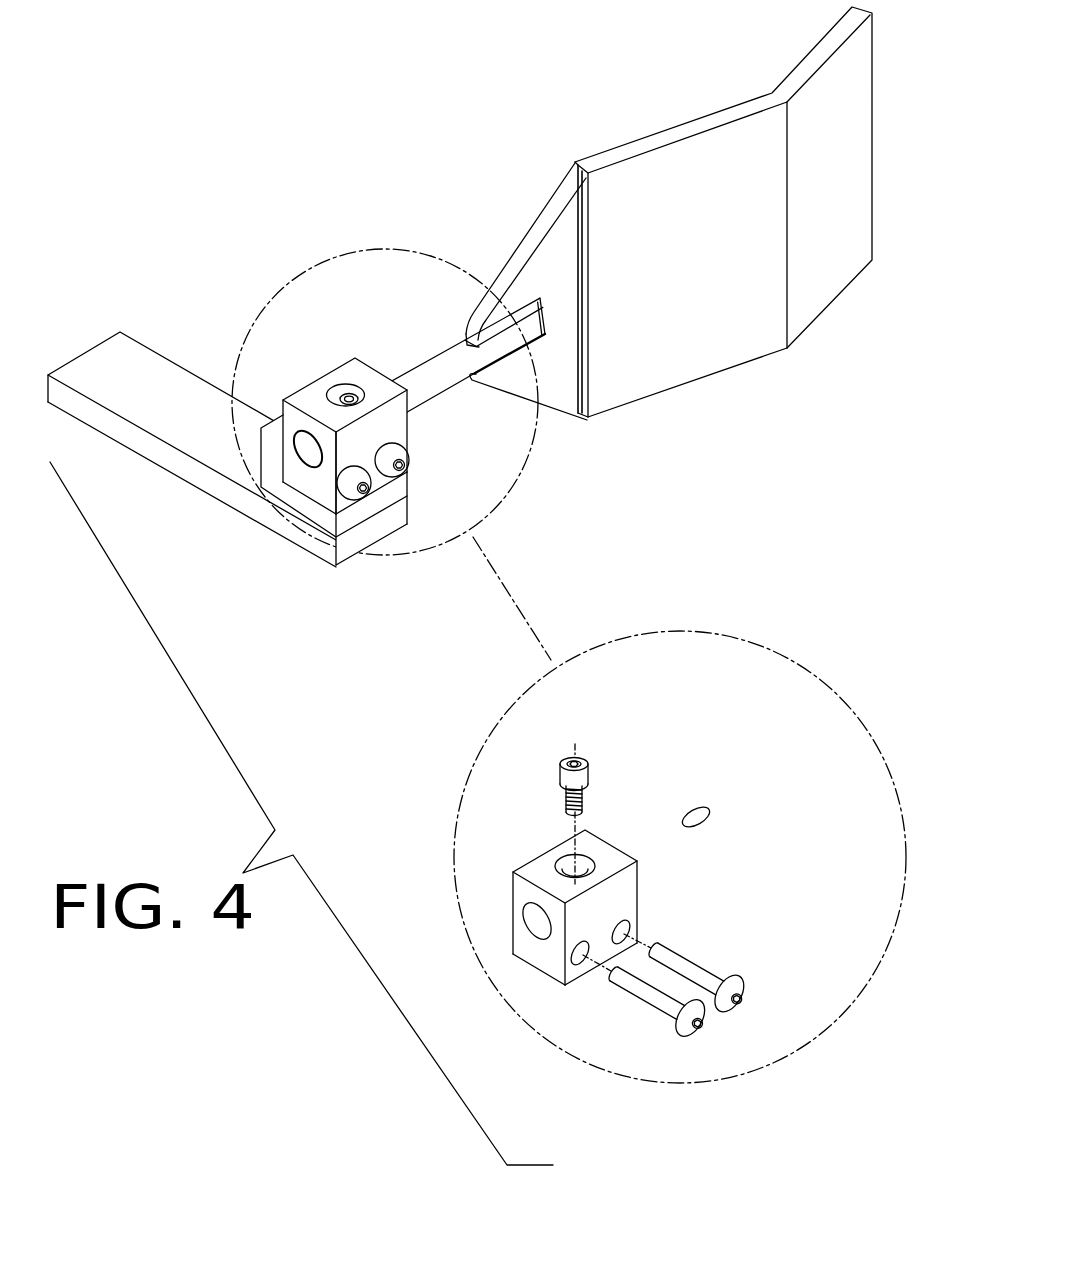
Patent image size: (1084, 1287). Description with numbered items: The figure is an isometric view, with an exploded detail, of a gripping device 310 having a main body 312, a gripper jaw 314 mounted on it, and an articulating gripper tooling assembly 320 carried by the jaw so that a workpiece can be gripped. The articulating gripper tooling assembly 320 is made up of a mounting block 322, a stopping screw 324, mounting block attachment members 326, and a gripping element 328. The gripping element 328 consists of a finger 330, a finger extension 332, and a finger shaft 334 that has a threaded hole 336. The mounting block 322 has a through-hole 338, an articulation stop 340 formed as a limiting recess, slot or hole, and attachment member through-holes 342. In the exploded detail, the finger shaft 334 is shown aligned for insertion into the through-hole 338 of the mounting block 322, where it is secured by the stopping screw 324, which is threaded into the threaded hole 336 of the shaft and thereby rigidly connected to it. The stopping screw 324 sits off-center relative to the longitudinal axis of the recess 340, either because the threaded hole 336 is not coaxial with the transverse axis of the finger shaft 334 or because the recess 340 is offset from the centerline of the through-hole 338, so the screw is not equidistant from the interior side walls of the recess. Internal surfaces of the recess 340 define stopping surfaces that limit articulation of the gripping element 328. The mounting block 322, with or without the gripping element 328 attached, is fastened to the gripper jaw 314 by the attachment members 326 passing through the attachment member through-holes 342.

The gripping device 310 is at (220, 290).
The main body 312 is at (187, 468).
The gripper jaw 314 is at (314, 514).
The articulating gripper tooling assembly 320 is at (470, 216).
The mounting block 322 is at (552, 950).
The stopping screw 324 is at (573, 757).
The mounting block attachment member 326 is at (691, 1030).
The gripping element 328 is at (843, 97).
The finger 330 is at (833, 218).
The finger extension 332 is at (828, 712).
The finger shaft 334 is at (758, 797).
The threaded hole 336 is at (693, 808).
The through-hole 338 is at (530, 920).
The articulation stop 340 is at (562, 860).
The attachment member through-hole 342 is at (578, 968).